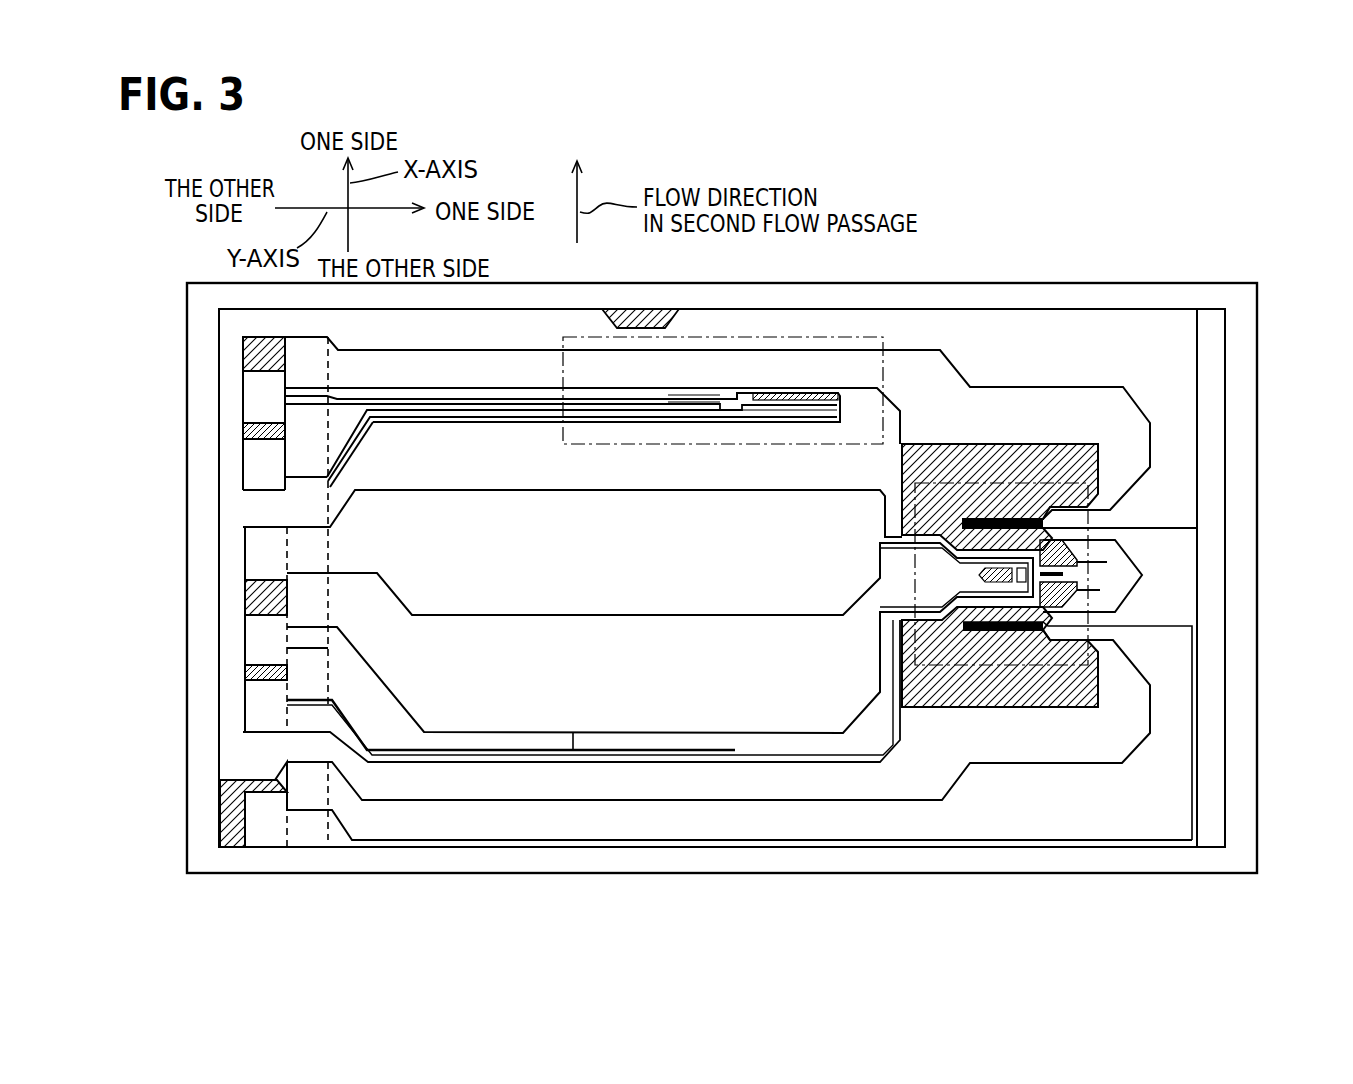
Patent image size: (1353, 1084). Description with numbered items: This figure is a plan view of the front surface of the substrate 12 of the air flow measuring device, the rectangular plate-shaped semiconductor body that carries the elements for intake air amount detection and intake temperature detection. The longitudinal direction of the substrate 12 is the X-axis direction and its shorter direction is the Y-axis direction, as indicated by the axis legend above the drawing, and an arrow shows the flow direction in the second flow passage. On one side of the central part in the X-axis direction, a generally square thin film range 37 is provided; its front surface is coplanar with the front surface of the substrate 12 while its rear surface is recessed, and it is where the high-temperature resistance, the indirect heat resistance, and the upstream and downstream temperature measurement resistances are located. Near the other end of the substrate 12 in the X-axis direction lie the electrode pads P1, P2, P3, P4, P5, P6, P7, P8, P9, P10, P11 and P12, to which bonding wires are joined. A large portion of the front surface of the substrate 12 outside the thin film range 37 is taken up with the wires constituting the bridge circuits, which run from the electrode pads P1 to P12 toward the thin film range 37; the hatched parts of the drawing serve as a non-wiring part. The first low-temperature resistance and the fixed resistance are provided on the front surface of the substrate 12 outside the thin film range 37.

The substrate 12 is at (1122, 283).
The thin film range 37 is at (1100, 633).
The electrode pad P1 is at (297, 347).
The electrode pad P2 is at (260, 403).
The electrode pad P3 is at (300, 432).
The electrode pad P4 is at (262, 462).
The electrode pad P5 is at (305, 497).
The electrode pad P6 is at (265, 550).
The electrode pad P7 is at (302, 597).
The electrode pad P8 is at (267, 632).
The electrode pad P9 is at (300, 684).
The electrode pad P10 is at (255, 713).
The electrode pad P11 is at (312, 803).
The electrode pad P12 is at (268, 838).